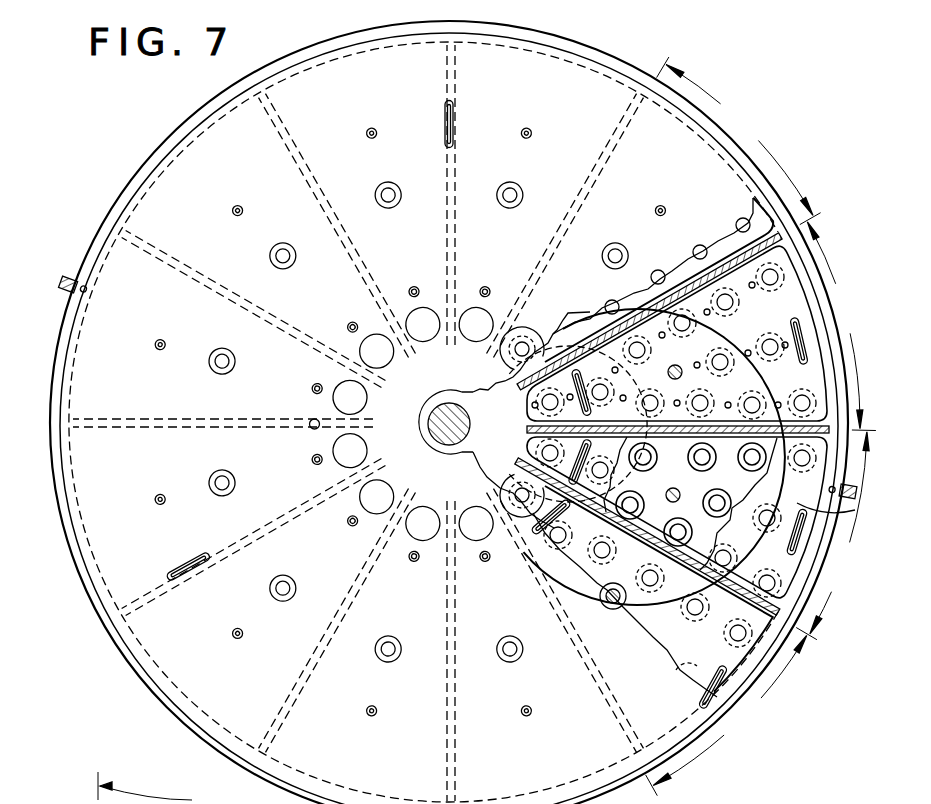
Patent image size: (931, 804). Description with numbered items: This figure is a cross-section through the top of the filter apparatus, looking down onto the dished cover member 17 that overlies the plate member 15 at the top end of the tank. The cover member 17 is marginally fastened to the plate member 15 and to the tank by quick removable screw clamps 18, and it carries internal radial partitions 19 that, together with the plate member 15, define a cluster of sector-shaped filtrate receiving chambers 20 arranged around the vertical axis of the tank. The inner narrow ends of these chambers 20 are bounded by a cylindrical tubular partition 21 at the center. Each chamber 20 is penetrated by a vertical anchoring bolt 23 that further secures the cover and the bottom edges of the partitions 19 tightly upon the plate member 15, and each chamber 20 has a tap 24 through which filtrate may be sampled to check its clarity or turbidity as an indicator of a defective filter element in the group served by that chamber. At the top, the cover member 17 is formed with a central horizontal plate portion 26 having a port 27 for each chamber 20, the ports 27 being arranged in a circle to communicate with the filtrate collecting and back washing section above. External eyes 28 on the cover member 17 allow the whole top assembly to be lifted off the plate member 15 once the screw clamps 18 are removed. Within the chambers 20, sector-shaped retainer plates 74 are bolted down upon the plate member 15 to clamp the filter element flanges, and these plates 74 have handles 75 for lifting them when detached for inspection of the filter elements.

The plate member 15 is at (736, 492).
The dished cover member 17 is at (160, 212).
The screw clamps 18 is at (62, 275).
The radial partitions 19 is at (455, 213).
The filtrate receiving chambers 20 is at (472, 423).
The tubular partition 21 is at (525, 398).
The anchoring bolt 23 is at (384, 192).
The tap 24 is at (368, 132).
The central horizontal plate portion 26 is at (328, 372).
The port 27 is at (345, 397).
The external eyes 28 is at (456, 124).
The retainer plate 74 is at (769, 334).
The handles 75 is at (578, 378).